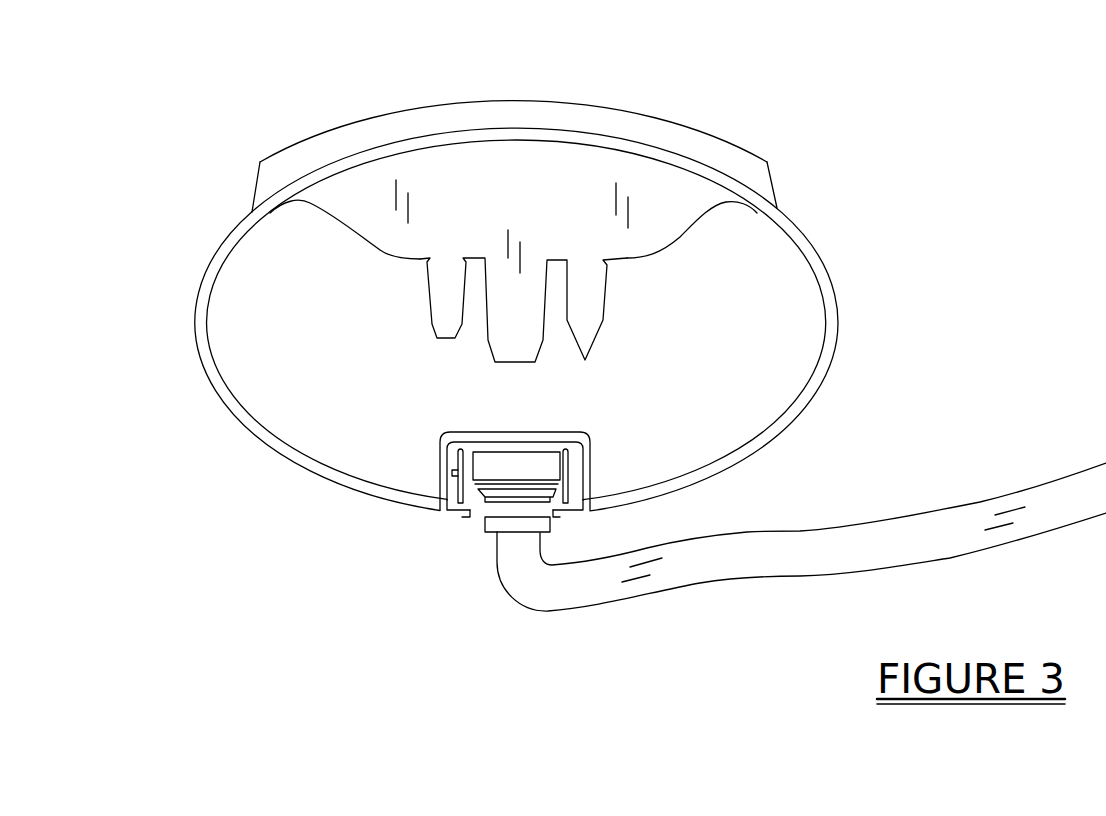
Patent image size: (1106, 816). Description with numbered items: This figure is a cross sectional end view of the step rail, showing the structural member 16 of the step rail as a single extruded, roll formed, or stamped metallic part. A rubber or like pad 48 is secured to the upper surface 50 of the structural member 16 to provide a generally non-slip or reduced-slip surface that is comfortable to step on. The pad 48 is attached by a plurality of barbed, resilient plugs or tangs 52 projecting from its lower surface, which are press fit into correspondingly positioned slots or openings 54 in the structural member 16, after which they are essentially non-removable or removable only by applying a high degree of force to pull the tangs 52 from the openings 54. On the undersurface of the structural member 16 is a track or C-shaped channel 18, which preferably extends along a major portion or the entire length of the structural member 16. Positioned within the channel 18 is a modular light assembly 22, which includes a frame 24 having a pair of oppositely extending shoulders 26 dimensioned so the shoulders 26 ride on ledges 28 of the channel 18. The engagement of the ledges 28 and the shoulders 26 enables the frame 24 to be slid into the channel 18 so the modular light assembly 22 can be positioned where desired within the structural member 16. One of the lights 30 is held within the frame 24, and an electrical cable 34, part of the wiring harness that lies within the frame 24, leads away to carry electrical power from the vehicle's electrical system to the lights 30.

The structural member 16 is at (182, 317).
The pad 48 is at (616, 101).
The upper surface 50 is at (258, 180).
The openings 54 is at (420, 262).
The tangs 52 is at (428, 292).
The channel 18 is at (452, 479).
The frame 24 is at (527, 513).
The lights 30 is at (537, 465).
The ledges 28 is at (462, 519).
The shoulders 26 is at (553, 517).
The modular light assembly 22 is at (470, 527).
The electrical cable 34 is at (752, 530).